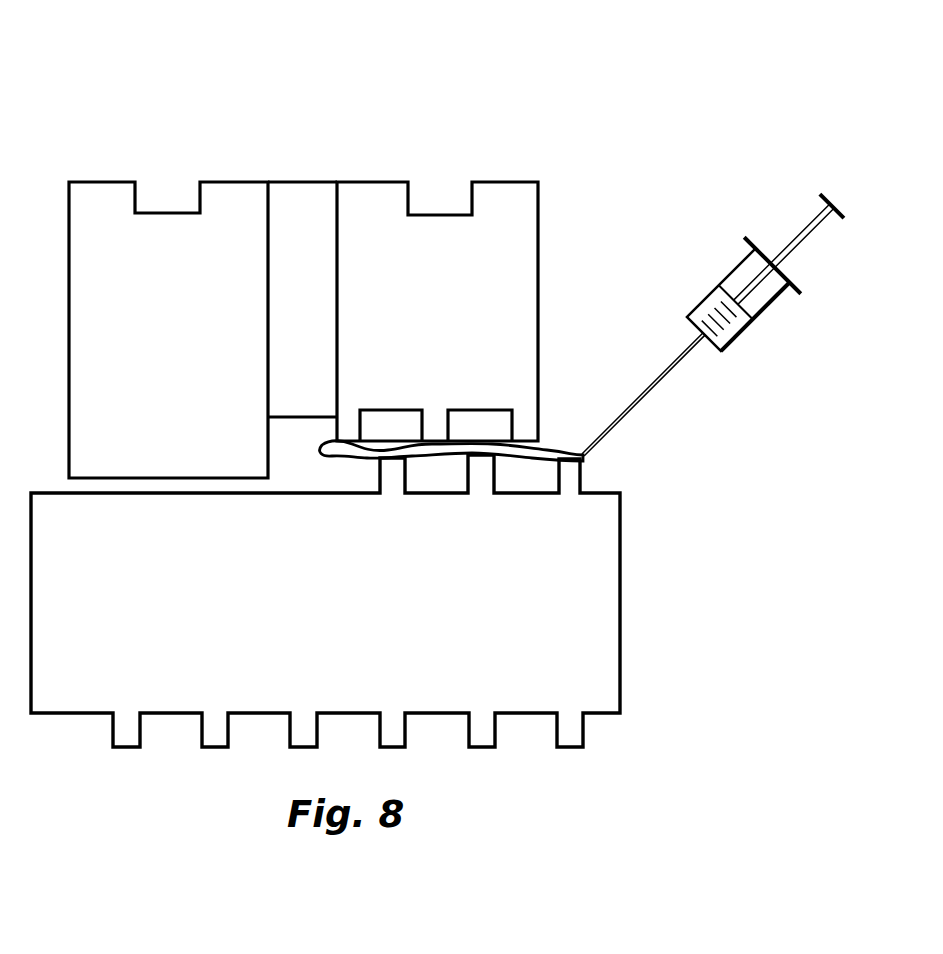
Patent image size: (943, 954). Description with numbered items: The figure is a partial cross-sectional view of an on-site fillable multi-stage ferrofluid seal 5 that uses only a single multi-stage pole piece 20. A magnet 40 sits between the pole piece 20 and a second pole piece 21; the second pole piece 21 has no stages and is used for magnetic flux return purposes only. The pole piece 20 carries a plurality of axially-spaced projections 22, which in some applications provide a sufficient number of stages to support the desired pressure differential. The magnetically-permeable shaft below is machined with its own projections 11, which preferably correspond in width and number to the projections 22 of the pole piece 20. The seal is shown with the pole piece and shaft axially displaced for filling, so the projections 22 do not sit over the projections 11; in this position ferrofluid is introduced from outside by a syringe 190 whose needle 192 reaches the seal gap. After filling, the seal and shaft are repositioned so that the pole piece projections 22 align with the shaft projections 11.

The multi-stage ferrofluid seal 5 is at (140, 150).
The second pole piece 21 is at (80, 277).
The magnet 40 is at (300, 192).
The pole piece 20 is at (531, 279).
The projections 22 is at (523, 422).
The projections 11 is at (570, 482).
The syringe 190 is at (768, 290).
The needle 192 is at (635, 407).